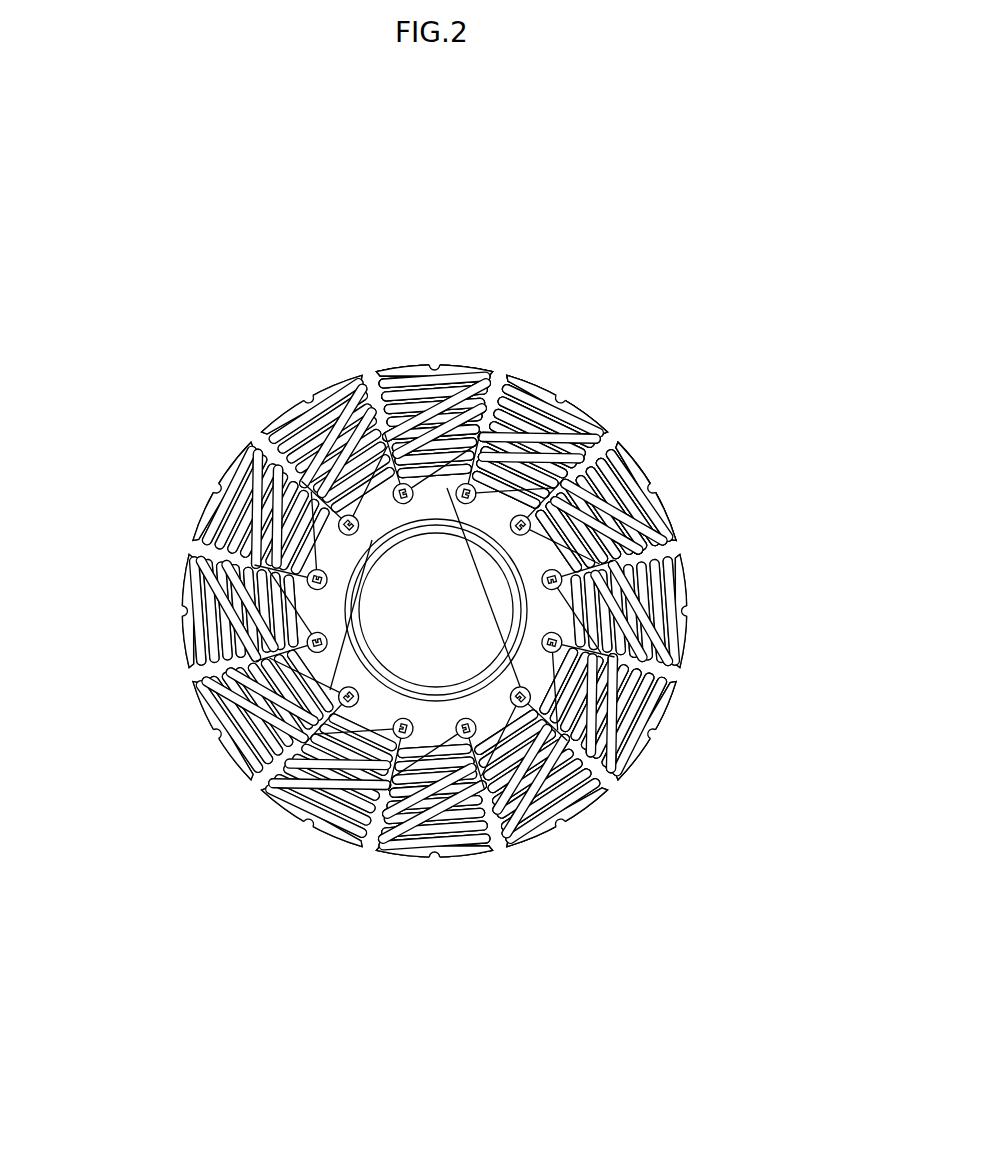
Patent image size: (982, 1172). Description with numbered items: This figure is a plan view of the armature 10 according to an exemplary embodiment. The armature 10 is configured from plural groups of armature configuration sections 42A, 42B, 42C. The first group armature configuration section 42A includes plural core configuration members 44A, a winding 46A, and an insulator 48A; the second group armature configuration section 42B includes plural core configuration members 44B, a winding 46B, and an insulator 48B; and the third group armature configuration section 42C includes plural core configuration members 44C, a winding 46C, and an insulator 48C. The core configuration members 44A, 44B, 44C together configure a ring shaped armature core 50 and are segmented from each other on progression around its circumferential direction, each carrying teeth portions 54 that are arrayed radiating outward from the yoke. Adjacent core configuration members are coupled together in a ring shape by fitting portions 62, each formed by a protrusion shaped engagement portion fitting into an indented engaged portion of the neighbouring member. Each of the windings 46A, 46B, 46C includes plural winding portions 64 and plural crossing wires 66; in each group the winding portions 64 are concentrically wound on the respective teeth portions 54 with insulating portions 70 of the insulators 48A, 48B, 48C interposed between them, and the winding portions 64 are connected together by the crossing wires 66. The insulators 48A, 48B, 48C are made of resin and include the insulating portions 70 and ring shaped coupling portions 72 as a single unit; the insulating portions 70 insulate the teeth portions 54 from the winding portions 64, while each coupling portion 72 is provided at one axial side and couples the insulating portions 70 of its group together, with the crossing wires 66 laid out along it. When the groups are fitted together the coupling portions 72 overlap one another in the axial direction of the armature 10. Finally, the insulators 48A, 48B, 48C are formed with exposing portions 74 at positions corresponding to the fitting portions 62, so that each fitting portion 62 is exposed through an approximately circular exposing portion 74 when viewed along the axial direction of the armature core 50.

The armature 10 is at (455, 232).
The first group armature configuration section 42A is at (458, 825).
The second group armature configuration section 42B is at (598, 753).
The third group armature configuration section 42C is at (516, 811).
The core configuration member 44A is at (579, 450).
The core configuration member 44B is at (626, 509).
The core configuration member 44C is at (485, 401).
The winding 46A is at (538, 421).
The winding 46B is at (607, 479).
The winding 46C is at (398, 400).
The insulator 48A is at (520, 413).
The insulator 48B is at (644, 554).
The insulator 48C is at (470, 399).
The armature core 50 is at (297, 409).
The teeth portion 54 is at (405, 373).
The fitting portion 62 is at (372, 540).
The winding portion 64 is at (430, 411).
The crossing wire 66 is at (549, 464).
The insulating portion 70 is at (455, 365).
The coupling portion 72 is at (388, 667).
The exposing portion 74 is at (358, 536).